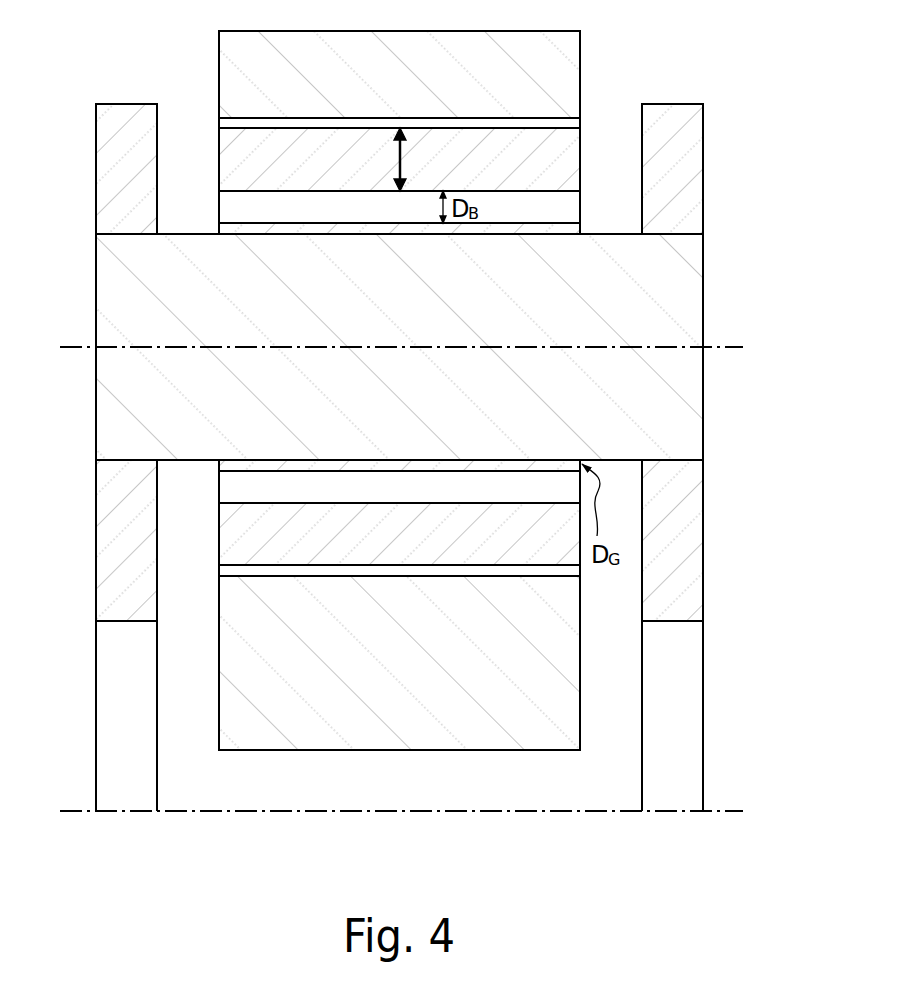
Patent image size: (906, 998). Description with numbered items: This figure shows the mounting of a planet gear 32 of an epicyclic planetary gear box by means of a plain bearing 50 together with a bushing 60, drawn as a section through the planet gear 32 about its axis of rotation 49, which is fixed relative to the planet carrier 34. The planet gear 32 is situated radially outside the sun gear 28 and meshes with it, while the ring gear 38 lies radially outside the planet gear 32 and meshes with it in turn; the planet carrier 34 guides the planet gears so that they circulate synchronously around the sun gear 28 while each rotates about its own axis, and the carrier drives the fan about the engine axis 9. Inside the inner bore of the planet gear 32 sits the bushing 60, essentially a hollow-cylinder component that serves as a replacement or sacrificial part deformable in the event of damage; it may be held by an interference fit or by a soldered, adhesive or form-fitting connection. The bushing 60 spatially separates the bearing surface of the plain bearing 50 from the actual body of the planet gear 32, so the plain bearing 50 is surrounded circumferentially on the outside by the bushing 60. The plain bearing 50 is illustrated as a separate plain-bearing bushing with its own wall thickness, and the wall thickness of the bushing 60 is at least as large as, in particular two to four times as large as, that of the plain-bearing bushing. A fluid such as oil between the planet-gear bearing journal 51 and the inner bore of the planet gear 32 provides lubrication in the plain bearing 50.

The engine axis 9 is at (582, 814).
The sun gear 28 is at (584, 655).
The planet gear 32 is at (584, 137).
The planet carrier 34 is at (125, 102).
The ring gear 38 is at (584, 70).
The axis of rotation 49 is at (732, 345).
The plain bearing 50 is at (527, 238).
The planet-gear bearing journal 51 is at (192, 463).
The bushing 60 is at (232, 205).